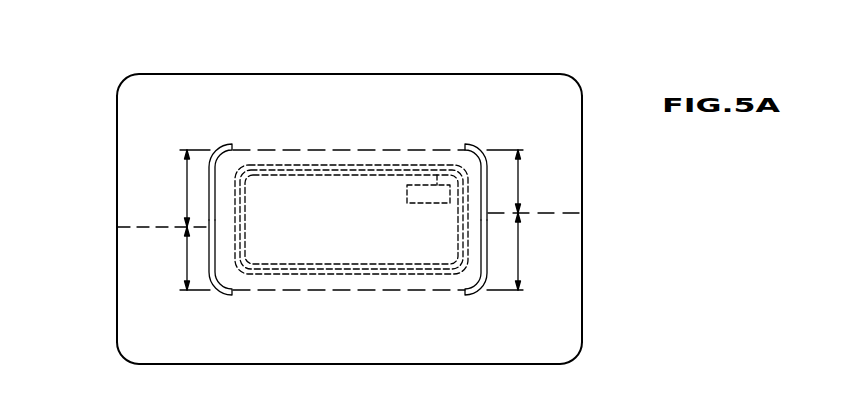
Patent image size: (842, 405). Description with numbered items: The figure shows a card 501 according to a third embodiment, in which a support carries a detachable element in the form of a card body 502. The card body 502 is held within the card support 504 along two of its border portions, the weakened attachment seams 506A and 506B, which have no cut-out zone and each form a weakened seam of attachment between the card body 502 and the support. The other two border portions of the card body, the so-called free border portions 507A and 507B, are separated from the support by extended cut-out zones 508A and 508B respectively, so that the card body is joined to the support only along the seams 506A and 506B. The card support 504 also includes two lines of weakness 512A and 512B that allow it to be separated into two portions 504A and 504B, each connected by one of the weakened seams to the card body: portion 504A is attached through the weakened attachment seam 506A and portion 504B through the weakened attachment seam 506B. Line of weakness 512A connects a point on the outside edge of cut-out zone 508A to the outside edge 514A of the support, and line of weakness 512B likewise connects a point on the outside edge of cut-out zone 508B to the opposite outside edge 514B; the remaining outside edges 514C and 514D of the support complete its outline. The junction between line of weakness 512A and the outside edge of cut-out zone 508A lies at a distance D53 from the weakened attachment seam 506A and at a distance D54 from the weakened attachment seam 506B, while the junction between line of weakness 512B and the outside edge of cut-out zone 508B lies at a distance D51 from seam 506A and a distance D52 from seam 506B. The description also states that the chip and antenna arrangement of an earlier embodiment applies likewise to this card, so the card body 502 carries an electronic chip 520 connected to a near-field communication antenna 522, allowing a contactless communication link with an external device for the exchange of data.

The card 501 is at (349, 221).
The card body 502 is at (351, 219).
The card support 504 is at (653, 195).
The portion of the support 504A is at (572, 143).
The portion of the support 504B is at (570, 242).
The weakened attachment seam 506A is at (352, 150).
The weakened attachment seam 506B is at (353, 290).
The free border portion 507A is at (485, 262).
The free border portion 507B is at (213, 260).
The cut-out zone 508A is at (483, 152).
The cut-out zone 508B is at (212, 170).
The line of weakness 512A is at (563, 213).
The line of weakness 512B is at (140, 226).
The outside edge of the support 514A is at (583, 258).
The outside edge of the support 514B is at (117, 257).
The bottom wall 514C is at (458, 365).
The top wall 514D is at (462, 74).
The connector 520 is at (423, 203).
The inner layer 522 is at (323, 175).
The distance D51 is at (167, 188).
The distance D52 is at (167, 258).
The distance D53 is at (537, 181).
The distance D54 is at (538, 251).